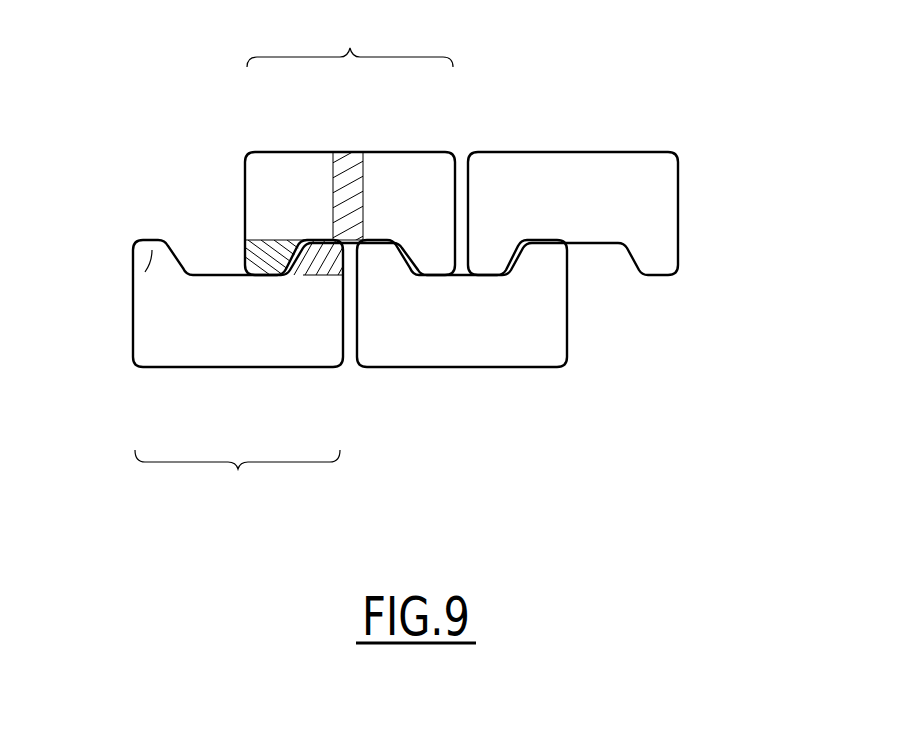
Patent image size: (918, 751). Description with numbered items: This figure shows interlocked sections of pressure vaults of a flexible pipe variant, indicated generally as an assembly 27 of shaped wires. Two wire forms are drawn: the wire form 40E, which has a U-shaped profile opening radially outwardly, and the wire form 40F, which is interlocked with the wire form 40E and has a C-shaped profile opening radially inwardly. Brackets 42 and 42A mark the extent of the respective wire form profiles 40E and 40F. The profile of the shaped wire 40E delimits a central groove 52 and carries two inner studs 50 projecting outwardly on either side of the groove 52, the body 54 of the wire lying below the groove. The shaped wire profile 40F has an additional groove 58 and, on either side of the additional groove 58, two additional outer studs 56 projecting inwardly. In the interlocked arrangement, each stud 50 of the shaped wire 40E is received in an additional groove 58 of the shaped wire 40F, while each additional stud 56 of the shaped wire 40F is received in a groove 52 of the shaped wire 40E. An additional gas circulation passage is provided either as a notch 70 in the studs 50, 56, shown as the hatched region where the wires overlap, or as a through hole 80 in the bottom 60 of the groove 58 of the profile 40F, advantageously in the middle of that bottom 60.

The seal assembly 27 is at (716, 90).
The wire form 40E is at (174, 340).
The wire form 40F is at (386, 196).
The segment pair 42 is at (237, 476).
The segment pair 42A is at (350, 40).
The inner stud 50 is at (133, 270).
The central groove 52 is at (210, 273).
The body 54 is at (226, 278).
The additional outer stud 56 is at (433, 264).
The additional groove 58 is at (320, 222).
The bottom of the groove 60 is at (302, 238).
The notch 70 is at (323, 258).
The through hole 80 is at (336, 181).